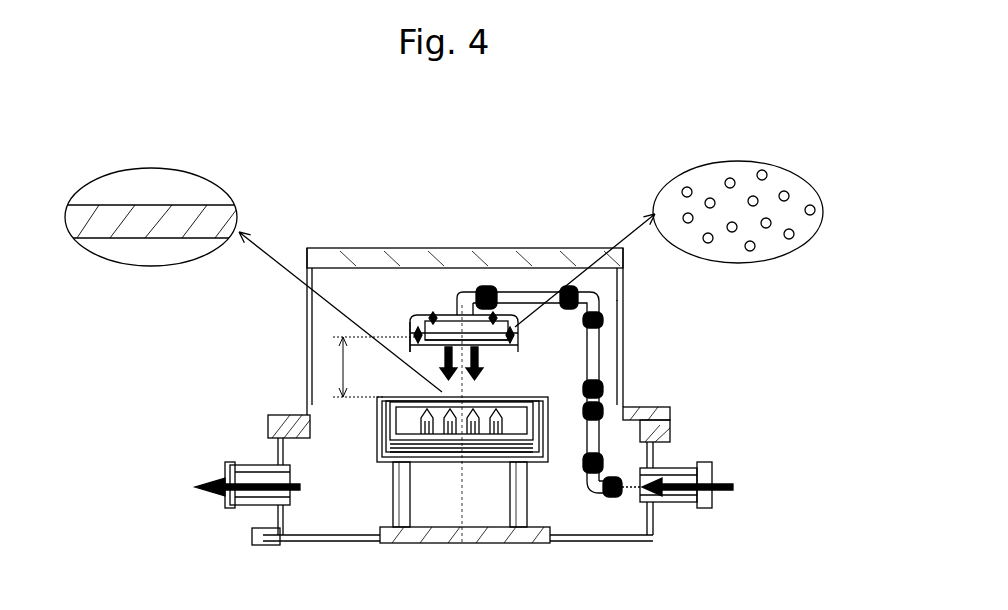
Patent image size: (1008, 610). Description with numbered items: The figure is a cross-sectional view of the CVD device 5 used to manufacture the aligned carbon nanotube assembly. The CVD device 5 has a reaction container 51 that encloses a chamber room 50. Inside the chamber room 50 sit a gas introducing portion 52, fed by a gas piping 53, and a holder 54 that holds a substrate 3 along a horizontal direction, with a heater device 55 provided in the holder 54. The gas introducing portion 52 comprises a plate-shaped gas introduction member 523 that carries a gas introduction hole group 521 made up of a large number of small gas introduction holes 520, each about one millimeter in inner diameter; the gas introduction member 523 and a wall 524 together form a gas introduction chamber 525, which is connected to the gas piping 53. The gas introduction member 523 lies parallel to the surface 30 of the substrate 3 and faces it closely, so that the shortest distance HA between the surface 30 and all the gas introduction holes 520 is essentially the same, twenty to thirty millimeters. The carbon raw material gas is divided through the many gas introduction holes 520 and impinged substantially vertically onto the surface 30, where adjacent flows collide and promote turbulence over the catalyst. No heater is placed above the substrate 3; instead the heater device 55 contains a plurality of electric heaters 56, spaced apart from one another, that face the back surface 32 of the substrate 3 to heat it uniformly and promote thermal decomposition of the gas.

The substrate 3 is at (78, 223).
The surface 30 is at (483, 398).
The back surface 32 is at (142, 240).
The CVD device 5 is at (645, 340).
The chamber room 50 is at (312, 357).
The reaction container 51 is at (428, 250).
The gas introducing portion 52 is at (438, 318).
The gas piping 53 is at (536, 290).
The holder 54 is at (377, 431).
The heater device 55 is at (437, 465).
The electric heaters 56 is at (381, 463).
The gas introduction holes 520 is at (765, 172).
The gas introduction hole group 521 is at (752, 251).
The gas introduction member 523 is at (713, 172).
The wall 524 is at (413, 316).
The gas introduction chamber 525 is at (489, 287).
The shortest distance HA is at (376, 367).